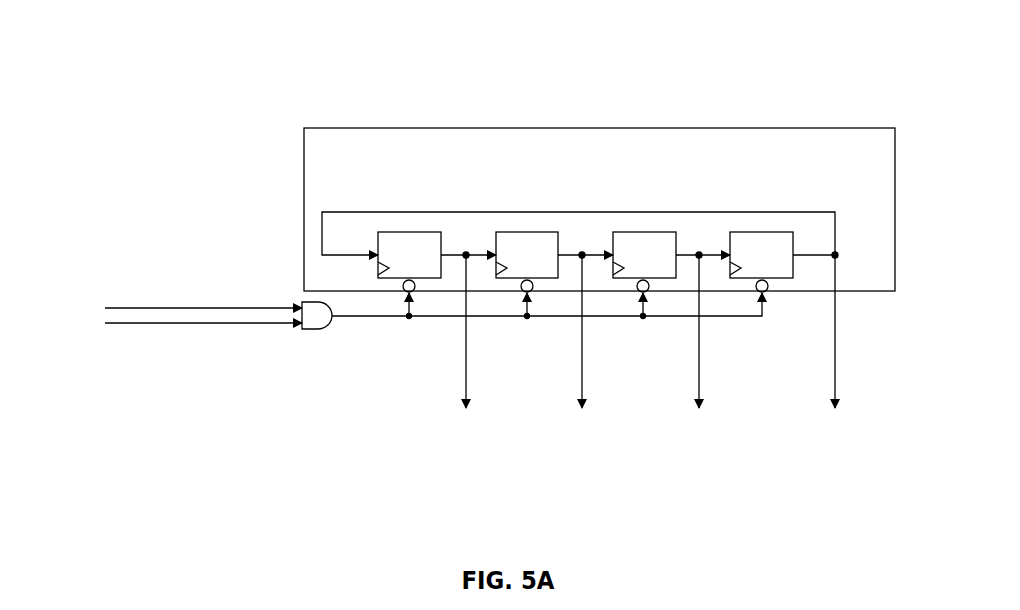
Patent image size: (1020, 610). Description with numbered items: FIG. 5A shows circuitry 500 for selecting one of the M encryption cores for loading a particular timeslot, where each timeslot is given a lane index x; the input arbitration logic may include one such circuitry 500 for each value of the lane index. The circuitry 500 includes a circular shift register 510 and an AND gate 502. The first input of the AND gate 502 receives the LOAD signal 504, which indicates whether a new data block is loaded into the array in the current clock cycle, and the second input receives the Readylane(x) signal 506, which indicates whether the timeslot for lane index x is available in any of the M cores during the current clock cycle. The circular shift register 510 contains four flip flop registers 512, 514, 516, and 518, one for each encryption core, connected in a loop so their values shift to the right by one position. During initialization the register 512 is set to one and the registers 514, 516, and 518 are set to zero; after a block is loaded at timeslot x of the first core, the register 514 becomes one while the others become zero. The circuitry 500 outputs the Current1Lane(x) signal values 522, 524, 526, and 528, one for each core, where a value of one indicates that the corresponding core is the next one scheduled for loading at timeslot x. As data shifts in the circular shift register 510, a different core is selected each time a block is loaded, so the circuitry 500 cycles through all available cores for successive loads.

The circuitry 500 is at (180, 140).
The AND gate 502 is at (318, 332).
The LOAD signal 504 is at (147, 282).
The Readylane(x) signal 506 is at (170, 360).
The circular shift register 510 is at (838, 128).
The flip flop register 512 is at (408, 232).
The flip flop register 514 is at (527, 232).
The flip flop register 516 is at (643, 232).
The flip flop register 518 is at (762, 232).
The Current1Lane(x) signal value 522 is at (468, 376).
The Current1Lane(x) signal value 524 is at (585, 376).
The Current1Lane(x) signal value 526 is at (702, 376).
The Current1Lane(x) signal value 528 is at (838, 376).